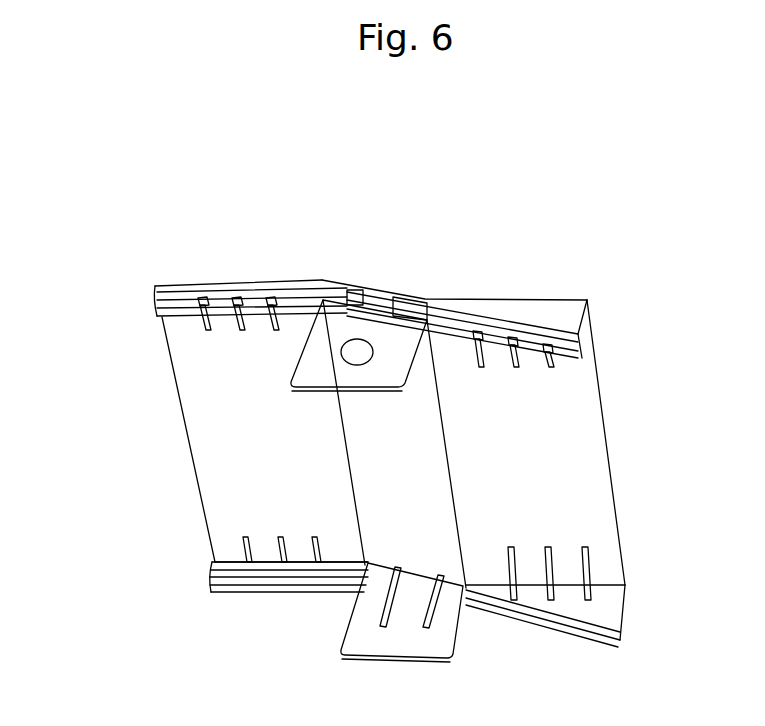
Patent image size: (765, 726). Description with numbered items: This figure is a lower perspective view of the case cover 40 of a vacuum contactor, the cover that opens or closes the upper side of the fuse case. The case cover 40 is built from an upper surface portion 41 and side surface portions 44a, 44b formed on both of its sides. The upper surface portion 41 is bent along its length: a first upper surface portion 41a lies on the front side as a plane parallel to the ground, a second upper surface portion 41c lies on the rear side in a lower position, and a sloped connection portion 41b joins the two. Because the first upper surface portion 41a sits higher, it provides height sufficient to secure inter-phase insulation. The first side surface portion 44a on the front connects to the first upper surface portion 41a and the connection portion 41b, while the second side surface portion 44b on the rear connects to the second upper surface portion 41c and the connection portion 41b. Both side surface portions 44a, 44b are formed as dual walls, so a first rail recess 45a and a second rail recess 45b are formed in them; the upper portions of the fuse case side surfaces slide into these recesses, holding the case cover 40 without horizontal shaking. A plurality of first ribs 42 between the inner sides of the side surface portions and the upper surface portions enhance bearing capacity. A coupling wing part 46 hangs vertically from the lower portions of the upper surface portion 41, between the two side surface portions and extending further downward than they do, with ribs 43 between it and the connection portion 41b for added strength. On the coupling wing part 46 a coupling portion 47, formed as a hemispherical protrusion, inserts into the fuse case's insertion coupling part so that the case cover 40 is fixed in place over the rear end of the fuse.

The case cover 40 is at (103, 334).
The upper surface portion 41 is at (688, 390).
The first upper surface portion 41a is at (420, 421).
The connection portion 41b is at (566, 442).
The second upper surface portion 41c is at (598, 441).
The first ribs 42 is at (590, 565).
The ribs 43 is at (437, 603).
The first side surface portion 44a is at (183, 298).
The second side surface portion 44b is at (550, 310).
The first rail recess 45a is at (228, 308).
The second rail recess 45b is at (505, 343).
The coupling wing part 46 is at (402, 327).
The coupling portion 47 is at (357, 338).